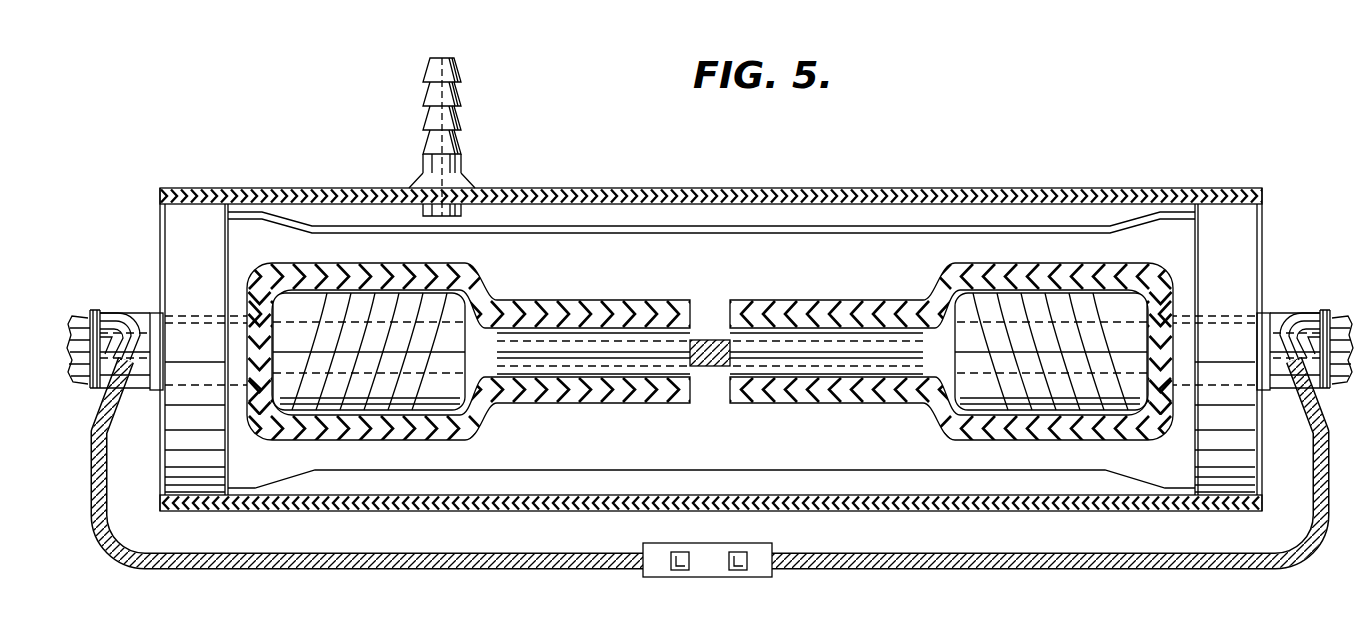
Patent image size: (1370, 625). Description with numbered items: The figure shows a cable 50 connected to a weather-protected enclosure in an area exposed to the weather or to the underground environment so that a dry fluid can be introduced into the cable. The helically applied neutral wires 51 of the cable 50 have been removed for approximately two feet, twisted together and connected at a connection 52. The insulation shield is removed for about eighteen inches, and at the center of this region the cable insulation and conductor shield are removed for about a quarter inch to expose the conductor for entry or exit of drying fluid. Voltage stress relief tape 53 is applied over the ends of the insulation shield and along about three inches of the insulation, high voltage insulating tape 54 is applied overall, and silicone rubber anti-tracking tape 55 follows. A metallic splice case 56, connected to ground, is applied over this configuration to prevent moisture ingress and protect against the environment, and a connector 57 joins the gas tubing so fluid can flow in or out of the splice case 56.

The cable 50 is at (145, 322).
The helically applied neutral wires 51 is at (83, 318).
The connection 52 is at (772, 548).
The voltage stress relief tape 53 is at (262, 308).
The high voltage insulating tape 54 is at (305, 282).
The silicone rubber anti-tracking tape 55 is at (478, 276).
The metallic splice case 56 is at (693, 190).
The connector 57 is at (463, 102).